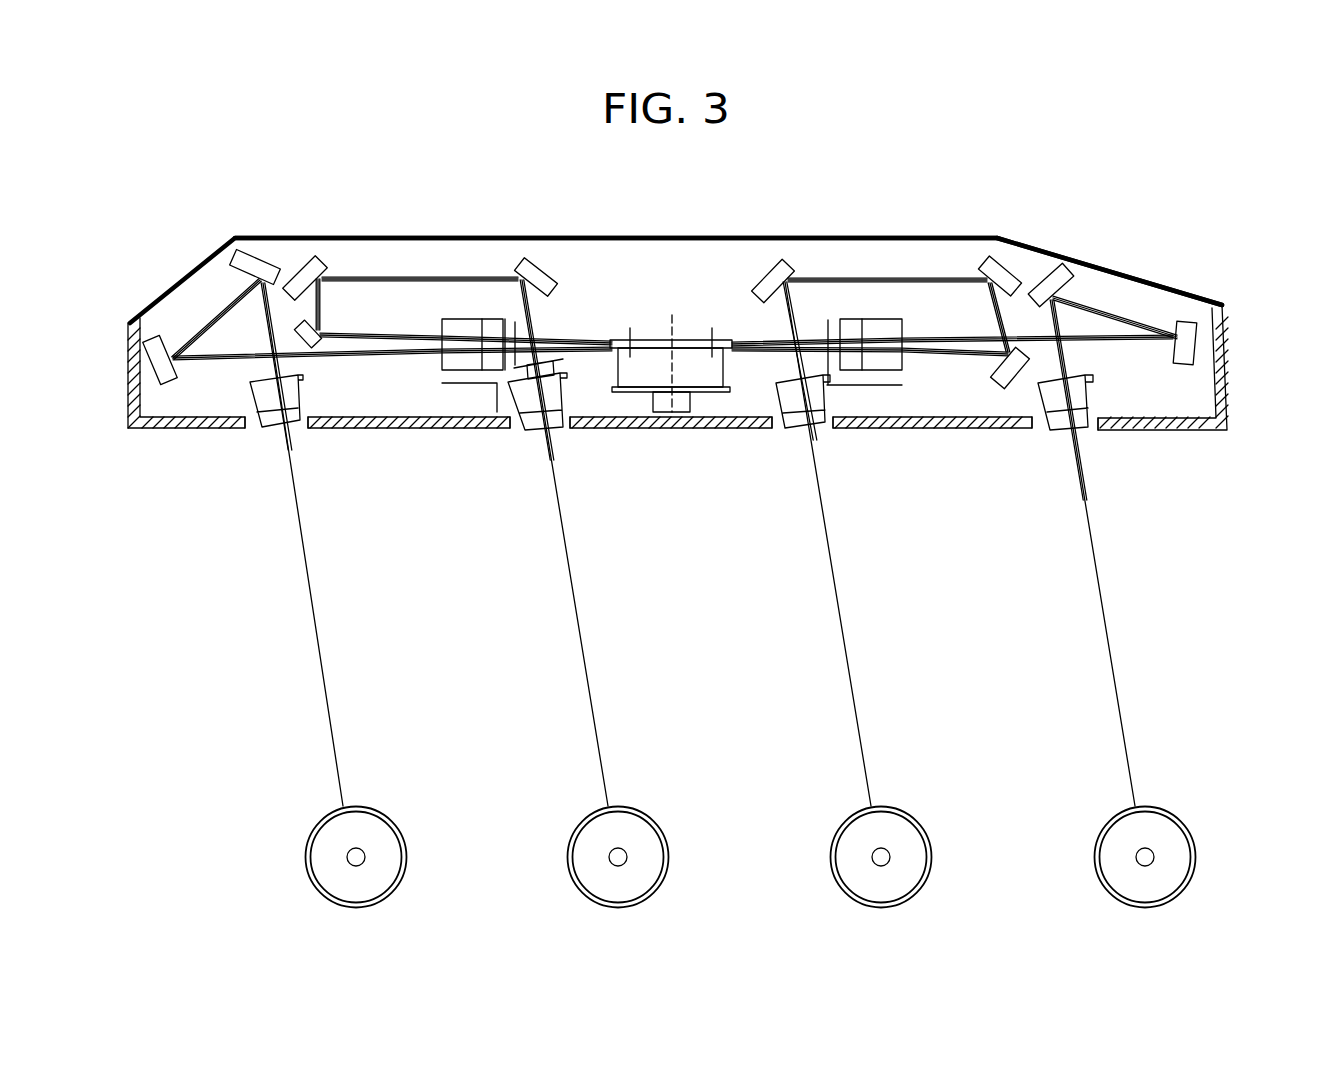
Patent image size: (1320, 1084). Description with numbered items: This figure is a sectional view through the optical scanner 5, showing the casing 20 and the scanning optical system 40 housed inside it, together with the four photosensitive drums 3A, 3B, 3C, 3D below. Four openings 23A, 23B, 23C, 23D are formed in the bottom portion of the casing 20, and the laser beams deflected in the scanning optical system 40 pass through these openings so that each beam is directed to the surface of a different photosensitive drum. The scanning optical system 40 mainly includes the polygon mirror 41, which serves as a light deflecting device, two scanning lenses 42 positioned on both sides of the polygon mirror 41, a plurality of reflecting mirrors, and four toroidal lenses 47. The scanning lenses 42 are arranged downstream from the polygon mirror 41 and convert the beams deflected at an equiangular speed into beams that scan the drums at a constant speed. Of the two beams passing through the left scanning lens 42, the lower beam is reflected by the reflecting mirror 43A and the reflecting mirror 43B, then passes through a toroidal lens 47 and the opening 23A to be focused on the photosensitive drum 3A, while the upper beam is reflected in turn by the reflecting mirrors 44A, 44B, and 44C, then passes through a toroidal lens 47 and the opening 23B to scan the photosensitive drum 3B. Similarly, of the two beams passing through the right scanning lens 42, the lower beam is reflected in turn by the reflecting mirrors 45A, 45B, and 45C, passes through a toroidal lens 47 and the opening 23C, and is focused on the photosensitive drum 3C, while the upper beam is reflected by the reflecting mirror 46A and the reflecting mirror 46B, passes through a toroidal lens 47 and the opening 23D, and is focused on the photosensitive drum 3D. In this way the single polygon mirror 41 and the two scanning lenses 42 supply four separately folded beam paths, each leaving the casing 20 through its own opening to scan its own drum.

The photosensitive drum 3A is at (392, 893).
The photosensitive drum 3B is at (654, 893).
The photosensitive drum 3C is at (917, 893).
The photosensitive drum 3D is at (1181, 893).
The optical scanning device 5 is at (872, 205).
The casing 20 is at (1229, 402).
The opening 23A is at (253, 428).
The opening 23B is at (510, 430).
The opening 23C is at (773, 428).
The opening 23D is at (1040, 430).
The scanning optical system 40 is at (680, 271).
The polygon mirror 41 is at (685, 340).
The scanning lens 42 is at (462, 318).
The reflecting mirror 43A is at (143, 364).
The reflecting mirror 43B is at (260, 247).
The reflecting mirror 44A is at (318, 320).
The reflecting mirror 44B is at (322, 257).
The reflecting mirror 44C is at (538, 257).
The reflecting mirror 45A is at (990, 380).
The reflecting mirror 45B is at (1003, 270).
The reflecting mirror 45C is at (790, 258).
The reflecting mirror 46A is at (1185, 320).
The reflecting mirror 46B is at (1062, 265).
The toroidal lens 47 is at (295, 393).